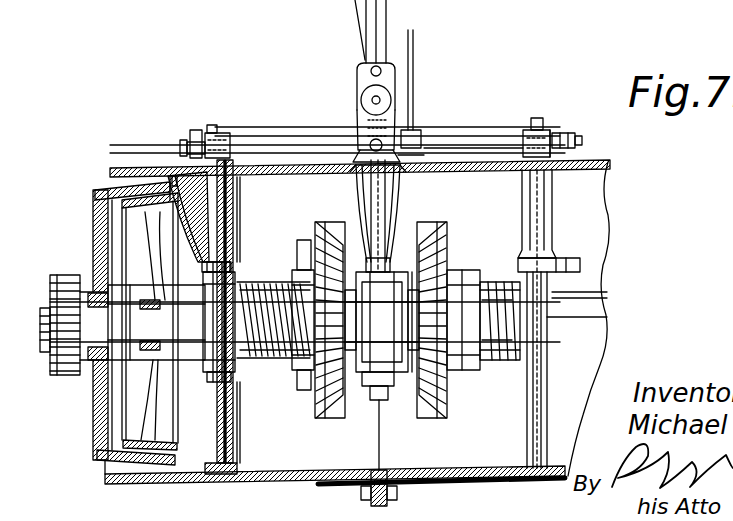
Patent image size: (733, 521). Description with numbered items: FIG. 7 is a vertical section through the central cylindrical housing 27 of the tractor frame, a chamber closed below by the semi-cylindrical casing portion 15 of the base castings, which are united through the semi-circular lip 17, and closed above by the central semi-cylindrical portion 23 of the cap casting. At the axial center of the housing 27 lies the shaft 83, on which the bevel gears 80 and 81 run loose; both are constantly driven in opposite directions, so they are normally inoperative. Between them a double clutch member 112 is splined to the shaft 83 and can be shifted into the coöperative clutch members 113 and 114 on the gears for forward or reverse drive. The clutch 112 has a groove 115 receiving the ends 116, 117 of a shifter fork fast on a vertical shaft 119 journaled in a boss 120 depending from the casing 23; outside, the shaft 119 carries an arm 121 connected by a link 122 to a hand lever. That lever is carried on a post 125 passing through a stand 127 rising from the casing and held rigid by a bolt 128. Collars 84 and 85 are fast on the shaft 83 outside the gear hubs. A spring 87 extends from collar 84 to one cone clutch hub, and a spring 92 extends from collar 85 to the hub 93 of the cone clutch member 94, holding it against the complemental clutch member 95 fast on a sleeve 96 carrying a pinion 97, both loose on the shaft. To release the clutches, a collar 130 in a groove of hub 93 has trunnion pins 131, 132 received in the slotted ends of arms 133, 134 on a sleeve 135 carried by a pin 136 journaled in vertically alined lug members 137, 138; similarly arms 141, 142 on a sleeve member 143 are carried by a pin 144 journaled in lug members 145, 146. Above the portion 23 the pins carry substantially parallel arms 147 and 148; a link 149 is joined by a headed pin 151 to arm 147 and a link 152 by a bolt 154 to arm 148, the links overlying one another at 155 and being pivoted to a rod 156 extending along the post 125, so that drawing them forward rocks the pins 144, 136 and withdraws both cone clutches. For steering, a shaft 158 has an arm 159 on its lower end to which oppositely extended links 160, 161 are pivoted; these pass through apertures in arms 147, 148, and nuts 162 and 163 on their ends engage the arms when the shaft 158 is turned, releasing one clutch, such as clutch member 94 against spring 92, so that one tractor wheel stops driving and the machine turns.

The semi-cylindrical casing portion 15 is at (293, 482).
The semi-circular lip 17 is at (371, 506).
The central semi-cylindrical portion 23 is at (486, 152).
The central cylindrical housing 27 is at (260, 180).
The bevel gear 80 is at (436, 224).
The bevel gear 81 is at (330, 222).
The shaft 83 is at (43, 318).
The collar 84 is at (465, 272).
The collar 85 is at (289, 362).
The spring 87 is at (491, 352).
The spring 92 is at (264, 282).
The hub 93 is at (135, 362).
The cone clutch member 94 is at (128, 168).
The complemental clutch member 95 is at (103, 190).
The sleeve 96 is at (92, 282).
The pinion 97 is at (45, 378).
The double clutch member 112 is at (356, 386).
The clutch member 113 is at (412, 380).
The clutch member 114 is at (334, 414).
The groove 115 is at (368, 240).
The fork end 116 is at (392, 242).
The fork end 117 is at (372, 400).
The vertical shaft 119 is at (398, 182).
The boss 120 is at (398, 212).
The arm 121 is at (430, 150).
The link 122 is at (414, 38).
The post 125 is at (389, 8).
The stand 127 is at (357, 76).
The bolt 128 is at (371, 69).
The collar 130 is at (178, 300).
The trunnion pin 131 is at (228, 394).
The trunnion pin 132 is at (170, 180).
The arm 133 is at (228, 380).
The arm 134 is at (182, 168).
The sleeve 135 is at (237, 262).
The pin 136 is at (234, 197).
The lug member 137 is at (234, 216).
The lug member 138 is at (240, 425).
The arm 141 is at (580, 266).
The arm 142 is at (612, 350).
The sleeve member 143 is at (552, 306).
The pin 144 is at (548, 213).
The lug member 145 is at (556, 192).
The lug member 146 is at (628, 354).
The arm 147 is at (557, 133).
The arm 148 is at (203, 130).
The link 149 is at (500, 130).
The headed pin 151 is at (541, 125).
The link 152 is at (298, 128).
The bolt 154 is at (217, 125).
The overlapping portion of links 155 is at (362, 118).
The rod 156 is at (353, 8).
The shaft 158 is at (385, 100).
The arm 159 is at (414, 128).
The link 160 is at (445, 152).
The link 161 is at (263, 168).
The nut 162 is at (582, 139).
The nut 163 is at (186, 138).